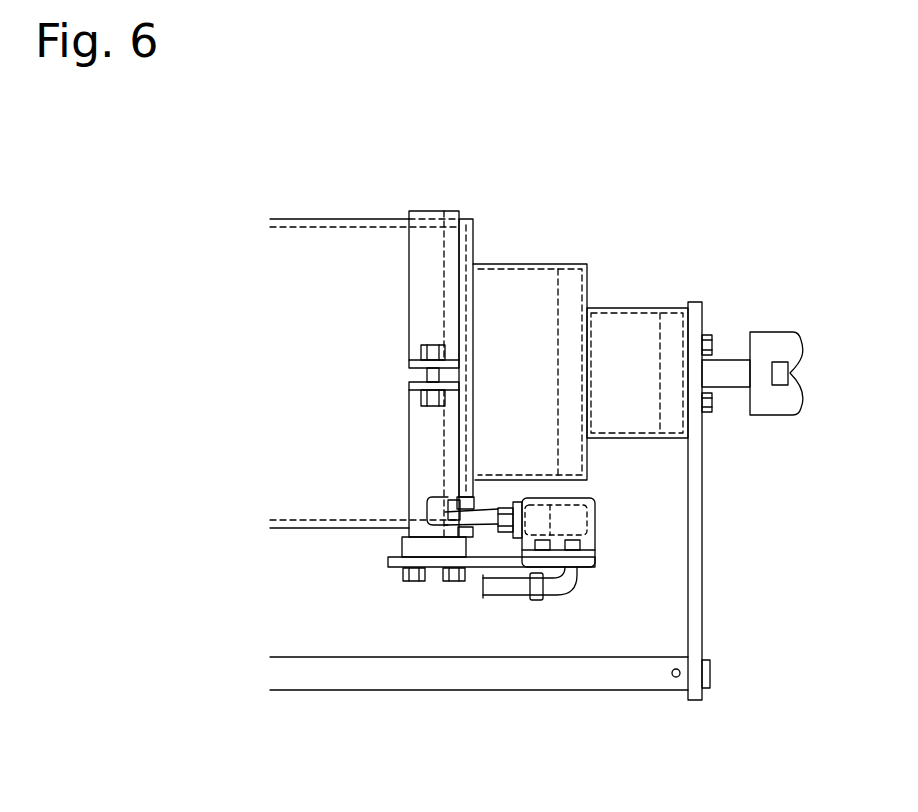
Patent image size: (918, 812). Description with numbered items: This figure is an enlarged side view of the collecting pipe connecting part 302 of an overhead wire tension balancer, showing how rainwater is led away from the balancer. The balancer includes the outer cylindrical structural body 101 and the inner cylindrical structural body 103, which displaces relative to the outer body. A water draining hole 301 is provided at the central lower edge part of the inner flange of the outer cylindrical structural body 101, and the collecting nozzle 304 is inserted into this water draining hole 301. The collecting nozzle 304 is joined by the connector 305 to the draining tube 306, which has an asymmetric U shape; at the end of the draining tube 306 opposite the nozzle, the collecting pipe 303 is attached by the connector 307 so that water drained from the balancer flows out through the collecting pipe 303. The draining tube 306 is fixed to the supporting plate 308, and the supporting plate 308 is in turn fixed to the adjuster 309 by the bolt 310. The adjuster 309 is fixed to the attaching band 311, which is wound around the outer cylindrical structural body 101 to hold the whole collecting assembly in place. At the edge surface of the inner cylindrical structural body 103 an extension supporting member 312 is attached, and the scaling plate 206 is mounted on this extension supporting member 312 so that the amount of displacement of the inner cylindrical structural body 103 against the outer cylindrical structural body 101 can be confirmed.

The outer cylindrical structural body 101 is at (343, 243).
The inner cylindrical structural body 103 is at (653, 307).
The scaling plate 206 is at (602, 680).
The water draining hole 301 is at (453, 510).
The collecting pipe connecting part 302 is at (602, 556).
The collecting pipe 303 is at (510, 587).
The collecting nozzle 304 is at (492, 520).
The connector 305 is at (505, 508).
The draining tube 306 is at (560, 515).
The connector 307 is at (540, 595).
The supporting plate 308 is at (393, 562).
The adjuster 309 is at (405, 550).
The bolt 310 is at (410, 588).
The attaching band 311 is at (432, 210).
The extension supporting member 312 is at (700, 578).